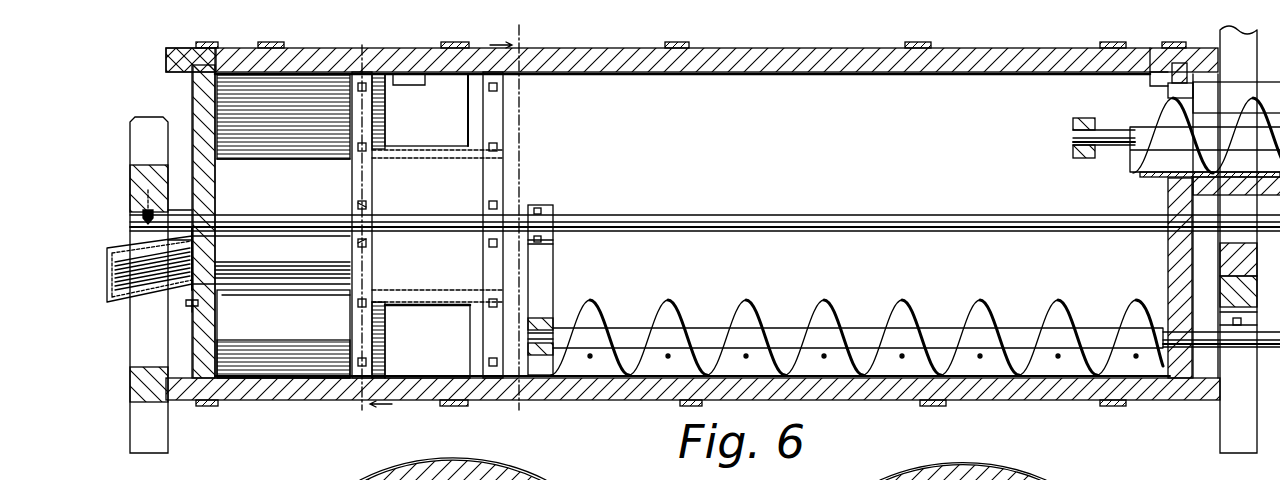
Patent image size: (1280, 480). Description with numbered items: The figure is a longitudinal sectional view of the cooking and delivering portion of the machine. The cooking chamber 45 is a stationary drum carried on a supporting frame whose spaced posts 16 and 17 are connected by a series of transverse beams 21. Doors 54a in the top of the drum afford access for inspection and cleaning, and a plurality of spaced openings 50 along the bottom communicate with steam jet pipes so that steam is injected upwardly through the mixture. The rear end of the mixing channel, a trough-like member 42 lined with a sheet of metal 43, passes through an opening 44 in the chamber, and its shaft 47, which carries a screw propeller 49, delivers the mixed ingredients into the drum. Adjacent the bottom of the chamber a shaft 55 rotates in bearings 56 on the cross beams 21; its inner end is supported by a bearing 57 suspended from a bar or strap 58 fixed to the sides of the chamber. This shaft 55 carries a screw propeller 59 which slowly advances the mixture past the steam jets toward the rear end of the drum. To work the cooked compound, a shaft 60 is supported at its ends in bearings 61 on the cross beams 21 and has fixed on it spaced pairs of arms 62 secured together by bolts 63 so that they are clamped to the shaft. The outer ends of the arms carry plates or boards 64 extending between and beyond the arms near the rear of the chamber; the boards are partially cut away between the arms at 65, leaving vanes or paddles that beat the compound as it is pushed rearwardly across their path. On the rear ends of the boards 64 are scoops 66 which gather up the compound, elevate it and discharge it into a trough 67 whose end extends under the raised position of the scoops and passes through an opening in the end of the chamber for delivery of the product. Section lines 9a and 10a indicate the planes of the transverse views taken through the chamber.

The doors 54a is at (300, 44).
The section line 10a is at (368, 235).
The section line 9a is at (510, 229).
The cooking chamber 45 is at (806, 68).
The posts 16 is at (1218, 45).
The transverse beams 21 is at (142, 172).
The bearings 61 is at (135, 226).
The trough 67 is at (156, 290).
The posts 17 is at (125, 347).
The plates or boards 64 is at (302, 160).
The arms 62 is at (372, 188).
The bolts 63 is at (370, 208).
The cut-away portion 65 is at (444, 138).
The scoops 66 is at (262, 350).
The bar or strap 58 is at (550, 280).
The bearing 57 is at (560, 315).
The shaft 60 is at (862, 208).
The screw propeller 59 is at (980, 302).
The shaft 55 is at (1110, 328).
The openings 50 is at (822, 356).
The bearings 56 is at (1242, 350).
The opening 44 is at (1168, 90).
The sheet of metal 43 is at (1073, 123).
The shaft 47 is at (1108, 150).
The screw conveyor 49 is at (1238, 110).
The trough-like member 42 is at (1258, 104).